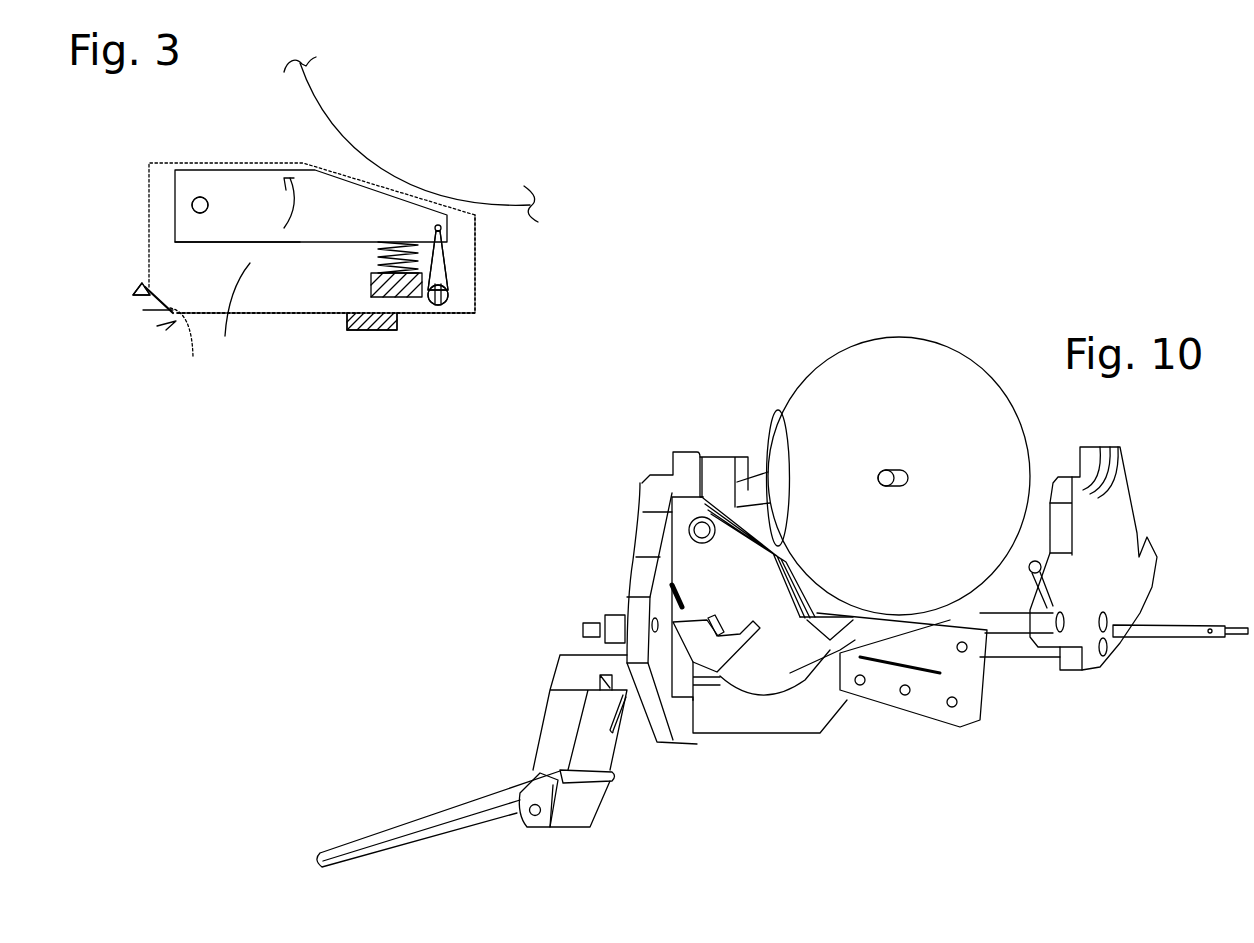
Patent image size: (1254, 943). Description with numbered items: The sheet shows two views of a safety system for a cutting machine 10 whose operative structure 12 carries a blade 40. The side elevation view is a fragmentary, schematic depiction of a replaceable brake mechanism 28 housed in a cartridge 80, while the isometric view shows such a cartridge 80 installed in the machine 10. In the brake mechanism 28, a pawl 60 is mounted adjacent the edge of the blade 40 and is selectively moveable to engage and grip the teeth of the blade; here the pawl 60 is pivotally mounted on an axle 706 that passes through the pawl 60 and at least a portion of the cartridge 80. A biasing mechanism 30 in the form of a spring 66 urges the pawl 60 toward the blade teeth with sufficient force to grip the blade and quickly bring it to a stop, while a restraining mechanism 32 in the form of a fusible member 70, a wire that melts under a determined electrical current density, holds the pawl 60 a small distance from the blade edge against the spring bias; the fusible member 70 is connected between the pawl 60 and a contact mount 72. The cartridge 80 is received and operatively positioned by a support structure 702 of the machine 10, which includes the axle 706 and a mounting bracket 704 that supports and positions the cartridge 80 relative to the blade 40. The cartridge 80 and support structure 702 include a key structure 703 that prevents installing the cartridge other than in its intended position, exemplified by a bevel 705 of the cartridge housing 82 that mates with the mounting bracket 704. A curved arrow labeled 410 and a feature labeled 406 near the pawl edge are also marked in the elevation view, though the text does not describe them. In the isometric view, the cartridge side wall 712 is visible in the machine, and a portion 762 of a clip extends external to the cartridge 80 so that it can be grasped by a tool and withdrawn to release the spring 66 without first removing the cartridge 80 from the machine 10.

In FIG. 10, the machine 10 is at (637, 410).
In FIG. 10, the operative structure 12 is at (622, 458).
In FIG. 3, the brake mechanism 28 is at (222, 262).
In FIG. 3, the biasing mechanism 30 is at (362, 258).
In FIG. 3, the restraining mechanism 32 is at (449, 257).
In FIG. 3, the blade 40 is at (430, 110).
In FIG. 10, the blade 40 is at (913, 425).
In FIG. 3, the pawl 60 is at (223, 177).
In FIG. 10, the pawl 60 is at (780, 413).
In FIG. 3, the spring 66 is at (382, 250).
In FIG. 3, the fusible member 70 is at (443, 272).
In FIG. 3, the contact mount 72 is at (446, 301).
In FIG. 3, the cartridge 80 is at (276, 405).
In FIG. 10, the cartridge 80 is at (750, 700).
In FIG. 3, the housing 82 is at (248, 316).
In FIG. 3, the arm edge 406 is at (268, 241).
In FIG. 3, the guide curve 410 is at (230, 314).
In FIG. 3, the support structure 702 is at (190, 205).
In FIG. 3, the key structure 703 is at (142, 278).
In FIG. 3, the mounting bracket 704 is at (133, 296).
In FIG. 3, the bevel 705 is at (197, 349).
In FIG. 3, the axle 706 is at (192, 201).
In FIG. 10, the side wall 712 is at (744, 583).
In FIG. 10, the portion 762 is at (717, 619).